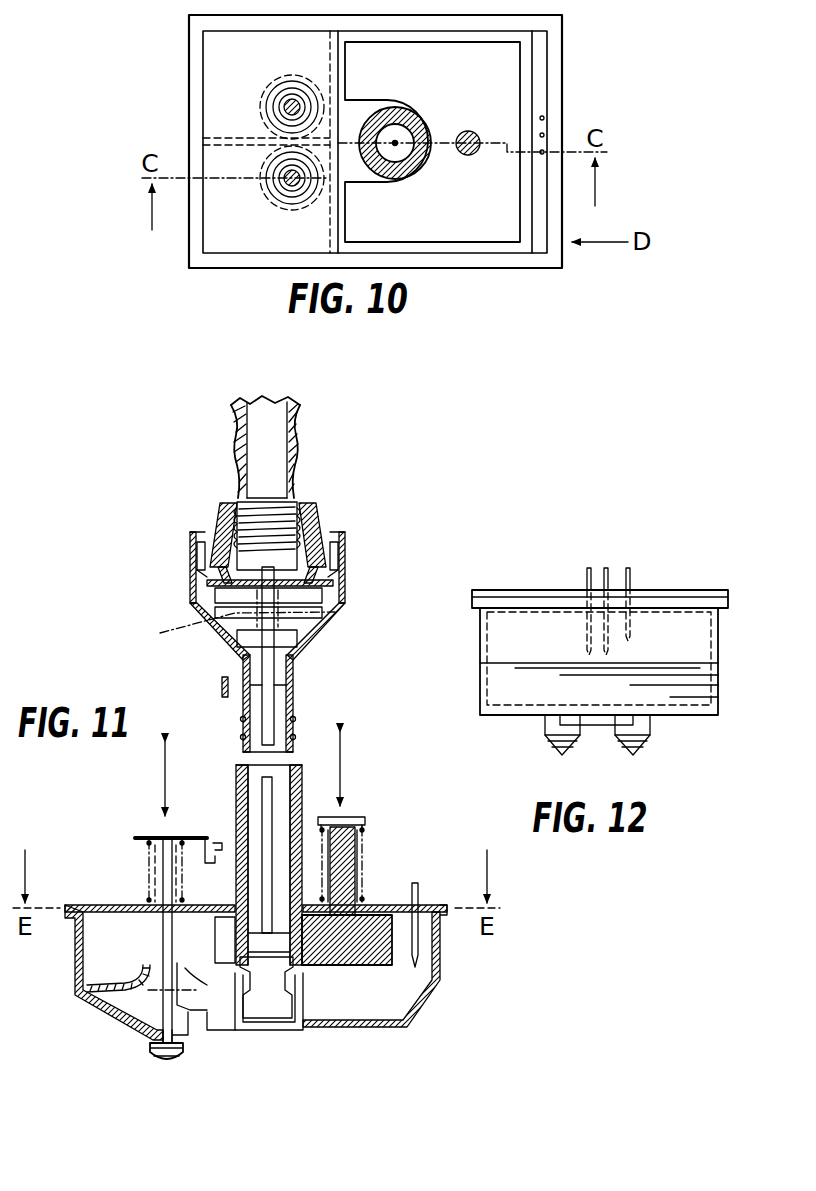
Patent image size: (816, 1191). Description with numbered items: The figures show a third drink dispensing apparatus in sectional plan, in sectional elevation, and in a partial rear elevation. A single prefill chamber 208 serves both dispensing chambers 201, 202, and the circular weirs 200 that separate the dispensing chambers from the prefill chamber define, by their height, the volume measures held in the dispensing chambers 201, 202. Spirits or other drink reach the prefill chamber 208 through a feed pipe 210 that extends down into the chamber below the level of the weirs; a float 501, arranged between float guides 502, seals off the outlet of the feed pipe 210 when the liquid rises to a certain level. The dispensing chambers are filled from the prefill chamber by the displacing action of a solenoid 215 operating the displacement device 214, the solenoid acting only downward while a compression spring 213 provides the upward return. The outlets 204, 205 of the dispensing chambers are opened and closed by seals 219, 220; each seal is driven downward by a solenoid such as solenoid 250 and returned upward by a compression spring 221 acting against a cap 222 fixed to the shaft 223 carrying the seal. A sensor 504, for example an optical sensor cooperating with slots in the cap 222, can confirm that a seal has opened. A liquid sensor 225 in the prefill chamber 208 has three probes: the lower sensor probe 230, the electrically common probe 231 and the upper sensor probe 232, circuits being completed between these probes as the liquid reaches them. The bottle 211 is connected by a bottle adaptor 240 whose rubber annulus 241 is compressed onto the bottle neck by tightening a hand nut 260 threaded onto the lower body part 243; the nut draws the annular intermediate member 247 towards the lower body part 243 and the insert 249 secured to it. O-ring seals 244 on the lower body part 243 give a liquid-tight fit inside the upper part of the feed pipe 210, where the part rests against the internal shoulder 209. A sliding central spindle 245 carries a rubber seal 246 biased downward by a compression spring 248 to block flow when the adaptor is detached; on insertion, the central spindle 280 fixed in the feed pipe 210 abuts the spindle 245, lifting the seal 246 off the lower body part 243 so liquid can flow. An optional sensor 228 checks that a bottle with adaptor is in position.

In FIG. 10, the weir 200 is at (278, 92).
In FIG. 11, the weir 200 is at (147, 966).
In FIG. 10, the dispensing chamber 201 is at (238, 232).
In FIG. 11, the dispensing chamber 201 is at (125, 1002).
In FIG. 10, the dispensing chamber 202 is at (230, 86).
In FIG. 10, the outlet 204 is at (277, 173).
In FIG. 11, the outlet 204 is at (150, 1040).
In FIG. 12, the outlet 204 is at (545, 726).
In FIG. 10, the outlet 205 is at (277, 113).
In FIG. 12, the outlet 205 is at (650, 726).
In FIG. 10, the prefill chamber 208 is at (478, 250).
In FIG. 11, the prefill chamber 208 is at (362, 1013).
In FIG. 12, the prefill chamber 208 is at (495, 646).
In FIG. 11, the internal shoulder 209 is at (246, 823).
In FIG. 10, the feed pipe 210 is at (399, 169).
In FIG. 11, the feed pipe 210 is at (241, 796).
In FIG. 11, the bottle 211 is at (297, 469).
In FIG. 11, the compression spring 213 is at (364, 845).
In FIG. 10, the displacement device 214 is at (475, 88).
In FIG. 11, the displacement device 214 is at (358, 952).
In FIG. 11, the solenoid 215 is at (370, 769).
In FIG. 11, the seal 219 is at (162, 1060).
In FIG. 12, the seal 219 is at (563, 756).
In FIG. 12, the seal 220 is at (634, 756).
In FIG. 11, the compression spring 221 is at (147, 858).
In FIG. 11, the cap 222 is at (138, 836).
In FIG. 11, the shaft 223 is at (163, 935).
In FIG. 11, the liquid sensor 225 is at (422, 890).
In FIG. 12, the liquid sensor 225 is at (582, 578).
In FIG. 11, the sensor 228 is at (220, 688).
In FIG. 10, the lower sensor probe 230 is at (540, 154).
In FIG. 11, the lower sensor probe 230 is at (420, 943).
In FIG. 12, the lower sensor probe 230 is at (587, 568).
In FIG. 10, the common probe 231 is at (540, 134).
In FIG. 12, the common probe 231 is at (608, 568).
In FIG. 10, the upper sensor probe 232 is at (544, 117).
In FIG. 12, the upper sensor probe 232 is at (631, 578).
In FIG. 11, the bottle adaptor 240 is at (354, 556).
In FIG. 11, the rubber annulus 241 is at (309, 527).
In FIG. 11, the lower body part 243 is at (291, 685).
In FIG. 11, the O-ring seals 244 is at (240, 737).
In FIG. 11, the central spindle 245 is at (262, 667).
In FIG. 11, the rubber seal 246 is at (288, 648).
In FIG. 11, the annular intermediate member 247 is at (218, 515).
In FIG. 11, the compression spring 248 is at (226, 619).
In FIG. 11, the insert 249 is at (227, 592).
In FIG. 11, the solenoid 250 is at (133, 779).
In FIG. 11, the hand nut 260 is at (190, 565).
In FIG. 11, the central spindle 280 is at (264, 790).
In FIG. 11, the float 501 is at (262, 1007).
In FIG. 11, the float guides 502 is at (302, 997).
In FIG. 11, the sensor 504 is at (207, 869).